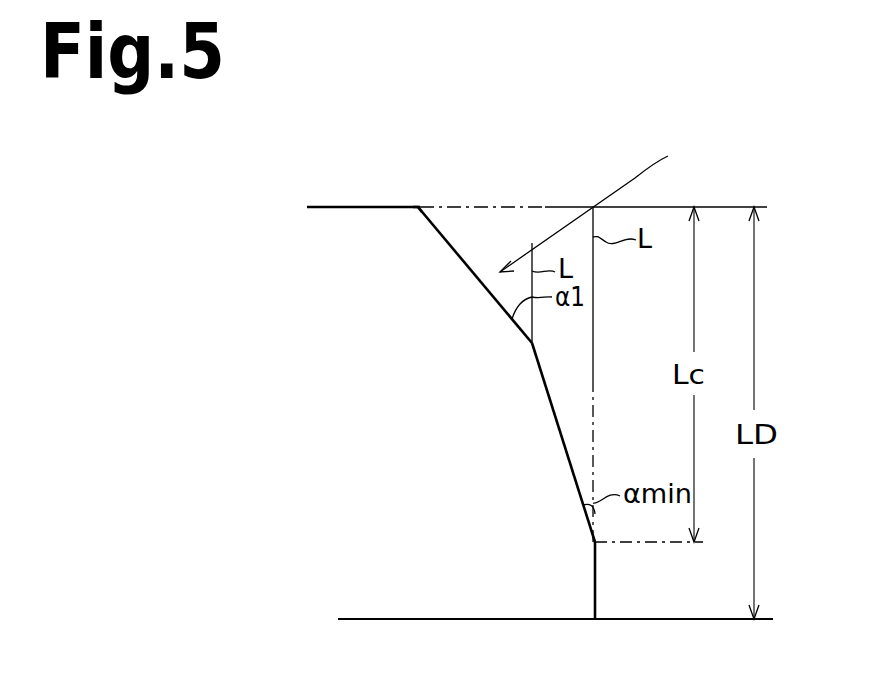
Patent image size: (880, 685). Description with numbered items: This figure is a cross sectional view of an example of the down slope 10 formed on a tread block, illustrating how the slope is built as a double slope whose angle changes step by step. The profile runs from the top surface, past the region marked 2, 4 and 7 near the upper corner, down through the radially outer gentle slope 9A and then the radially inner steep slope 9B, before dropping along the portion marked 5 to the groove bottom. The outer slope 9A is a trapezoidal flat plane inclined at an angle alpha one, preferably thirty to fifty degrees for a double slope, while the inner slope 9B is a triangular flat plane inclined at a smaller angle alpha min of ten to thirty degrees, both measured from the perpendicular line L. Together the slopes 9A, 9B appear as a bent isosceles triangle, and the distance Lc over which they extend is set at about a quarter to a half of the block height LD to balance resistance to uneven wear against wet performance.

The cutting tool 2 is at (518, 357).
The flank face 4 is at (358, 207).
The land portion 5 is at (595, 585).
The cutting edge corner 7 is at (420, 207).
The radially outer gentle slope 9A is at (463, 262).
The radially inner steep slope 9B is at (553, 408).
The down slope 10 is at (606, 203).